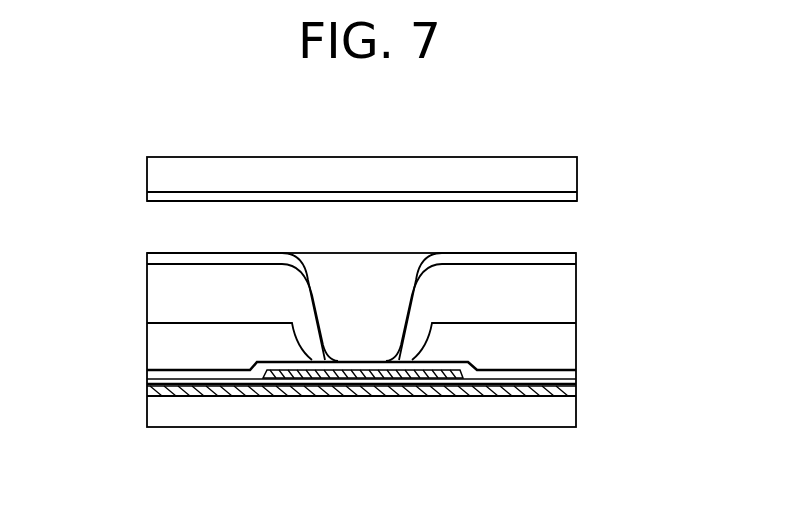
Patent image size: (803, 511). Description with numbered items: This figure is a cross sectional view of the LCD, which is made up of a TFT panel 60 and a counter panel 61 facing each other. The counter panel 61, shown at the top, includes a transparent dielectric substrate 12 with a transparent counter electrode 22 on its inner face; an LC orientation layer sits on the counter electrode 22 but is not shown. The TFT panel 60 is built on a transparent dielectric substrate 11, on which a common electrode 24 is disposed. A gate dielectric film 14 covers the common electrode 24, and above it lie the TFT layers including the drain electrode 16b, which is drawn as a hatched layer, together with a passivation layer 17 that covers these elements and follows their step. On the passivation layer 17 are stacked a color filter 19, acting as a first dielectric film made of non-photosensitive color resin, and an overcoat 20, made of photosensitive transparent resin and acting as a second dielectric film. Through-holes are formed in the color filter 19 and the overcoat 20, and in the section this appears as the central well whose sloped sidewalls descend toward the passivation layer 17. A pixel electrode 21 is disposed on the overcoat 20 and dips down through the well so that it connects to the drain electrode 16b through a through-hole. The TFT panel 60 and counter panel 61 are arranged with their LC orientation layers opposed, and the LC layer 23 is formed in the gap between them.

The transparent dielectric substrate 11 is at (263, 415).
The transparent dielectric substrate 12 is at (567, 173).
The gate dielectric film 14 is at (148, 385).
The drain electrode 16b is at (355, 374).
The passivation layer 17 is at (148, 372).
The color filter 19 is at (562, 348).
The overcoat 20 is at (562, 300).
The pixel electrode 21 is at (562, 258).
The transparent counter electrode 22 is at (567, 197).
The LC layer 23 is at (163, 226).
The common electrode 24 is at (182, 398).
The TFT panel 60 is at (400, 368).
The counter panel 61 is at (434, 185).